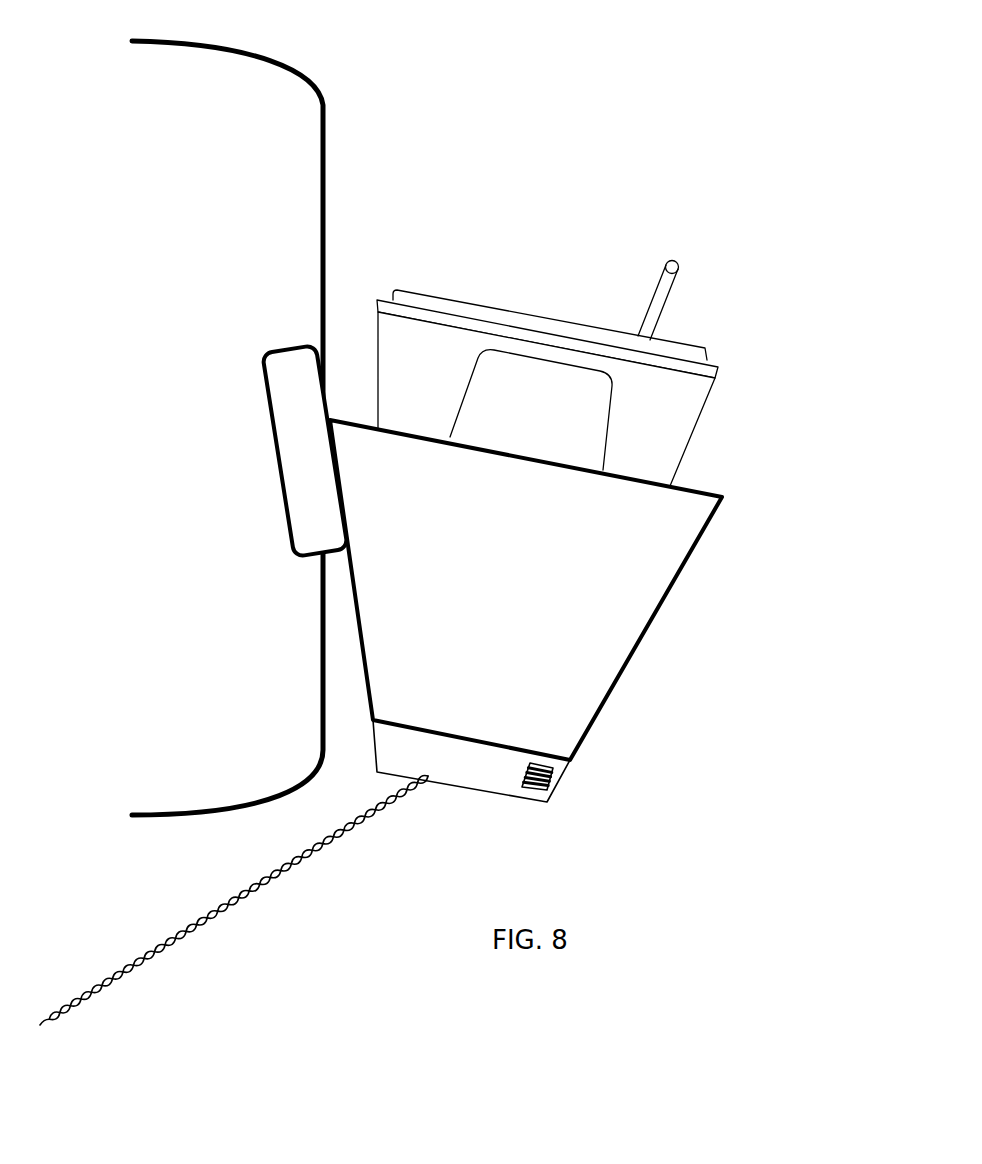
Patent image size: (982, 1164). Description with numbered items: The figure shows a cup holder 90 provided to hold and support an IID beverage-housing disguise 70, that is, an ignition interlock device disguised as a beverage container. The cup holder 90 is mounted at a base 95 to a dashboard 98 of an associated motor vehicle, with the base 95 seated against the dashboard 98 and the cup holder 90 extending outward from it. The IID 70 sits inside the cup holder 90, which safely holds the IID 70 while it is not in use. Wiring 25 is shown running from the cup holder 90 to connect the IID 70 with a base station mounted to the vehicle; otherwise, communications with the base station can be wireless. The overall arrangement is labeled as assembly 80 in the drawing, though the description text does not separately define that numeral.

The dashboard 98 is at (258, 75).
The IID beverage-housing disguise 70 is at (685, 405).
The cup holder 90 is at (630, 620).
The base 95 is at (282, 440).
The wiring 25 is at (222, 906).
The mounting assembly 80 is at (604, 79).